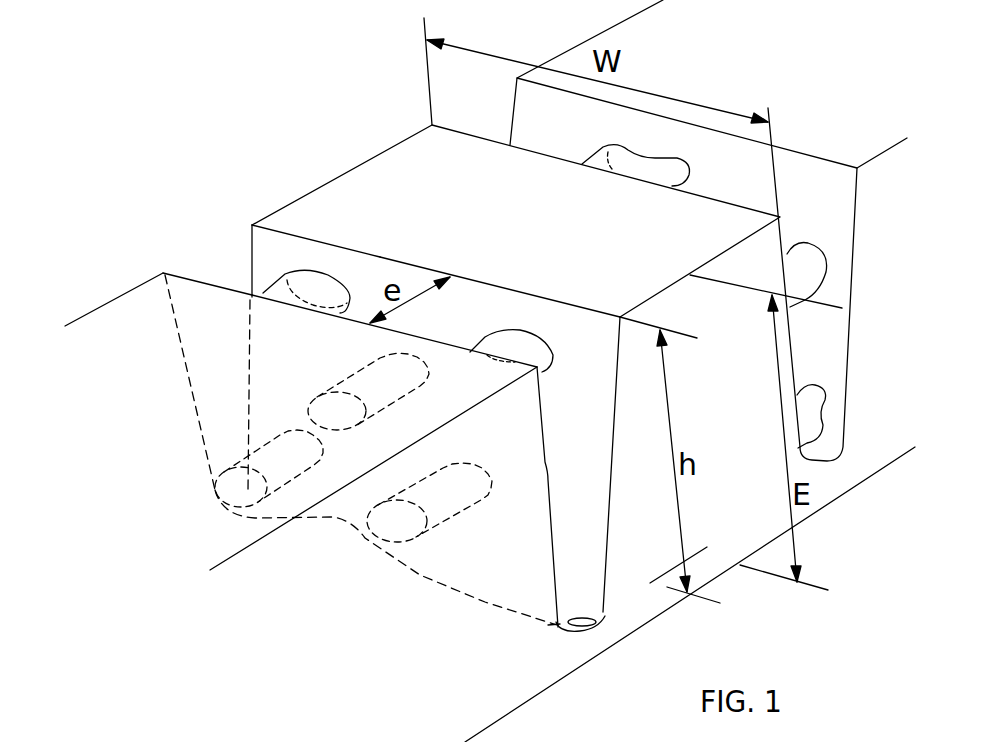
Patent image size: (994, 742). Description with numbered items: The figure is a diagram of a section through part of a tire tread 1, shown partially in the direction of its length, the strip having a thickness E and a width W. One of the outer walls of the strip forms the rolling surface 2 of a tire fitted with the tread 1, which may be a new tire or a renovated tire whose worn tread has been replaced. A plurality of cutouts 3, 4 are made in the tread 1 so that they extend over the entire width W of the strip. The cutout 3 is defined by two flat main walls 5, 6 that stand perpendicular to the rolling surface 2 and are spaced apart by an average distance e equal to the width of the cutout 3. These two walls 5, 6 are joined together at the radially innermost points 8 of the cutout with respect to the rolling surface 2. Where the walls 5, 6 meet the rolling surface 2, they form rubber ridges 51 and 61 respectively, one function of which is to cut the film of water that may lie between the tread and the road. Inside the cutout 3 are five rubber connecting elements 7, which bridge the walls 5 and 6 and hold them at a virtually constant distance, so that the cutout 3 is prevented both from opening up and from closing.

The tread 1 is at (540, 708).
The rolling surface 2 is at (138, 352).
The cutout 3 is at (373, 287).
The cutout 4 is at (498, 128).
The main wall 5 is at (546, 468).
The main wall 6 is at (594, 425).
The rubber connecting element 7 is at (512, 345).
The radially innermost points 8 is at (600, 618).
The rubber ridge 51 is at (232, 288).
The rubber ridge 61 is at (323, 241).